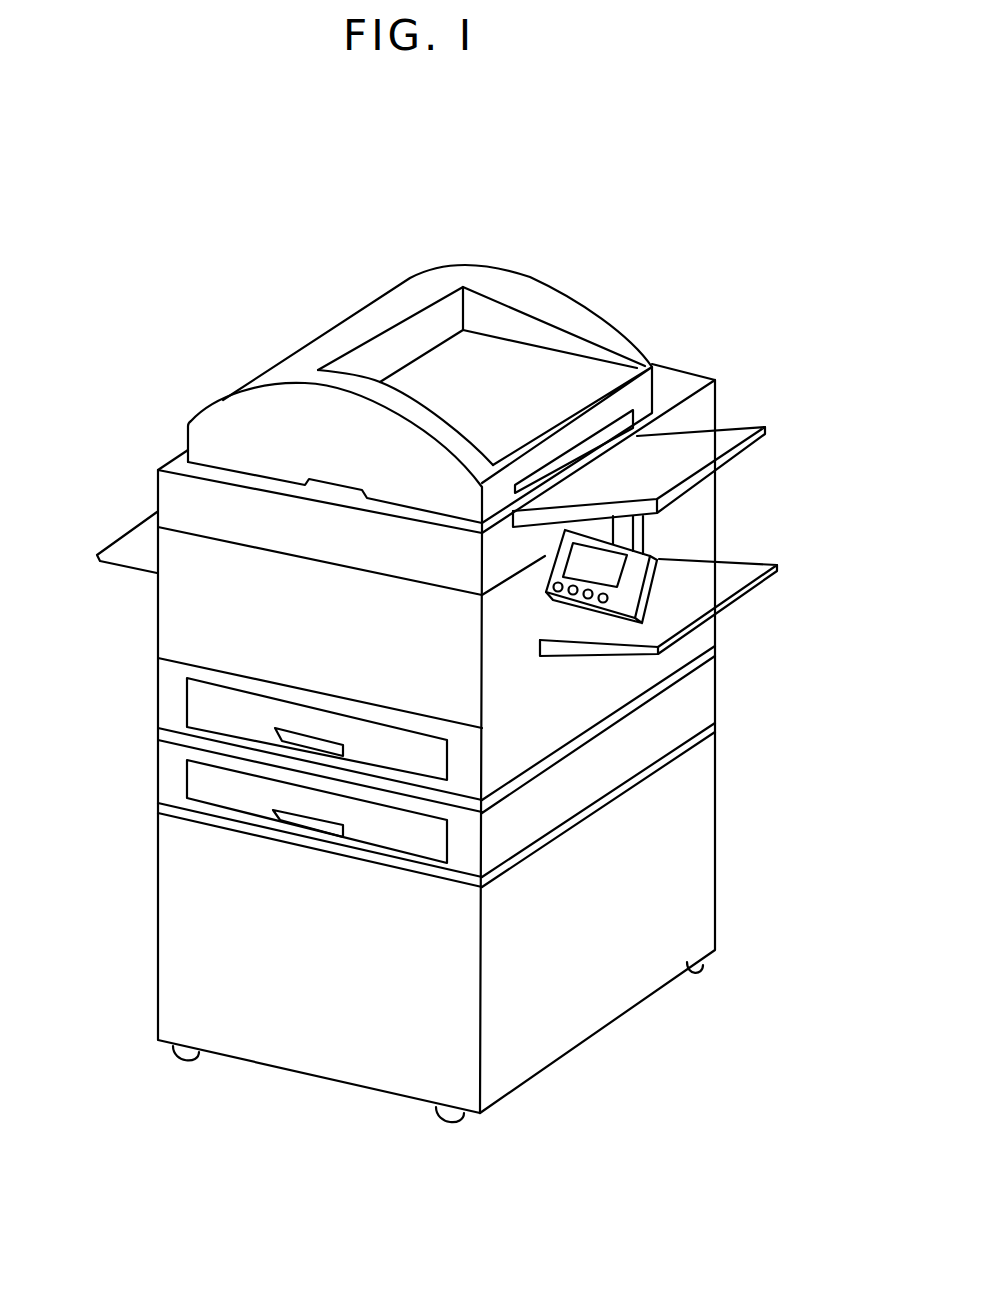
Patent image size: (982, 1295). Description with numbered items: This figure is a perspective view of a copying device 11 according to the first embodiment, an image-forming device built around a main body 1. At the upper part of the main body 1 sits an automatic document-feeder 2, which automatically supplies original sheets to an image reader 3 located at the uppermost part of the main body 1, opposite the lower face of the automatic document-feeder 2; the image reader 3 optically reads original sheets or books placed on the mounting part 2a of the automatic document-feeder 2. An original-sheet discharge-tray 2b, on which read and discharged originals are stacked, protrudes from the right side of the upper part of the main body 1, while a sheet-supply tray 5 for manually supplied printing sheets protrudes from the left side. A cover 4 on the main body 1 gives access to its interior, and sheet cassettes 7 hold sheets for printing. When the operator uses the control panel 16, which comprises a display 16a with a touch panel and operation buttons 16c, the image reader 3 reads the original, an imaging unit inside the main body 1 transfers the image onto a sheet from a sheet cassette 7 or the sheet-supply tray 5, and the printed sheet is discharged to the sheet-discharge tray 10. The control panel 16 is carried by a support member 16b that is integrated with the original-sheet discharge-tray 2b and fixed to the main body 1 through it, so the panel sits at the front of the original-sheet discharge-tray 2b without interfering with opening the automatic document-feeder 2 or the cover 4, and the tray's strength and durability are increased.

The copying device 11 is at (437, 256).
The main body 1 is at (668, 363).
The automatic document-feeder 2 is at (275, 358).
The mounting part 2a is at (487, 352).
The original-sheet discharge-tray 2b is at (723, 437).
The image reader 3 is at (168, 497).
The cover 4 is at (168, 625).
The sheet-supply tray 5 is at (137, 543).
The sheet cassette 7 is at (197, 703).
The sheet-discharge tray 10 is at (733, 583).
The control panel 16 is at (650, 601).
The display 16a is at (612, 572).
The support member 16b is at (640, 528).
The operation buttons 16c is at (603, 602).